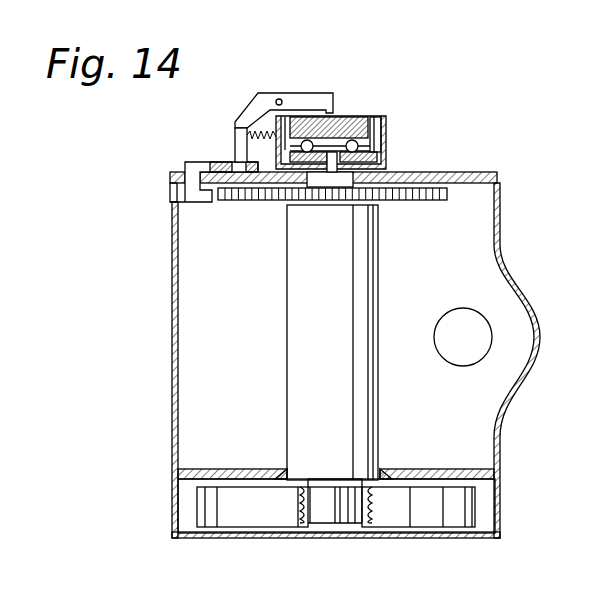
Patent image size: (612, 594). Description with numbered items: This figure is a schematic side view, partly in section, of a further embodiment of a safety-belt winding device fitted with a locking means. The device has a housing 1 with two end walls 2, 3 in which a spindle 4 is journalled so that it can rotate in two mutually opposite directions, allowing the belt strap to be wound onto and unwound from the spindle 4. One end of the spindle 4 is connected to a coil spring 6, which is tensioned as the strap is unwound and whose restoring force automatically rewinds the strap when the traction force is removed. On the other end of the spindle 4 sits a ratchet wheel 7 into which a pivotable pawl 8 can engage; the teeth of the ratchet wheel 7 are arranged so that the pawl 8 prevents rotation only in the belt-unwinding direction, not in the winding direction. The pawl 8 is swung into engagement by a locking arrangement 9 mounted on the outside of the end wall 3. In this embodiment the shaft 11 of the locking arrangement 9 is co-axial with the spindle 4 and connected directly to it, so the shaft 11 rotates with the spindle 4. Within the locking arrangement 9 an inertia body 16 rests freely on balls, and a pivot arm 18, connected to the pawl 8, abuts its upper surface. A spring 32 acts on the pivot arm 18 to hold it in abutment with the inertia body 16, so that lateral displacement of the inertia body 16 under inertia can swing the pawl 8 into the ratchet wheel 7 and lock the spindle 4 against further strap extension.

The housing 1 is at (500, 250).
The end wall 2 is at (500, 472).
The end wall 3 is at (470, 172).
The spindle 4 is at (287, 327).
The coil spring 6 is at (268, 518).
The ratchet wheel 7 is at (414, 200).
The pawl 8 is at (188, 192).
The locking arrangement 9 is at (370, 114).
The shaft 11 is at (358, 155).
The inertia body 16 is at (368, 118).
The pivot arm 18 is at (257, 108).
The spring 32 is at (248, 132).